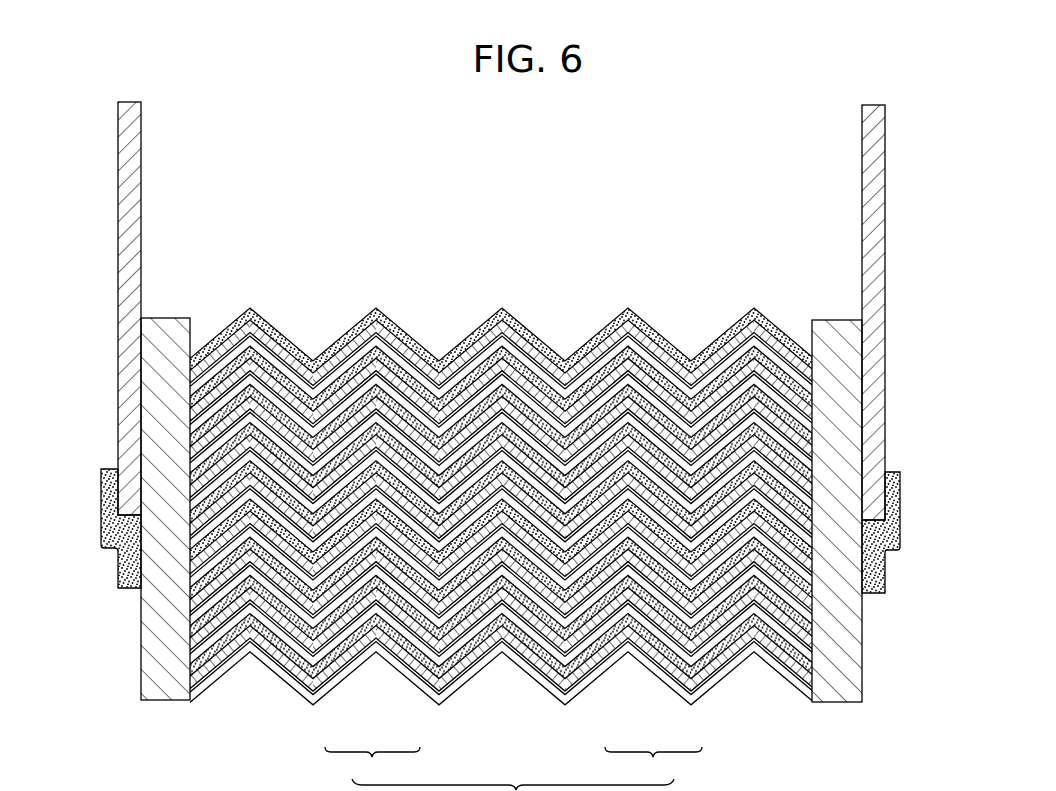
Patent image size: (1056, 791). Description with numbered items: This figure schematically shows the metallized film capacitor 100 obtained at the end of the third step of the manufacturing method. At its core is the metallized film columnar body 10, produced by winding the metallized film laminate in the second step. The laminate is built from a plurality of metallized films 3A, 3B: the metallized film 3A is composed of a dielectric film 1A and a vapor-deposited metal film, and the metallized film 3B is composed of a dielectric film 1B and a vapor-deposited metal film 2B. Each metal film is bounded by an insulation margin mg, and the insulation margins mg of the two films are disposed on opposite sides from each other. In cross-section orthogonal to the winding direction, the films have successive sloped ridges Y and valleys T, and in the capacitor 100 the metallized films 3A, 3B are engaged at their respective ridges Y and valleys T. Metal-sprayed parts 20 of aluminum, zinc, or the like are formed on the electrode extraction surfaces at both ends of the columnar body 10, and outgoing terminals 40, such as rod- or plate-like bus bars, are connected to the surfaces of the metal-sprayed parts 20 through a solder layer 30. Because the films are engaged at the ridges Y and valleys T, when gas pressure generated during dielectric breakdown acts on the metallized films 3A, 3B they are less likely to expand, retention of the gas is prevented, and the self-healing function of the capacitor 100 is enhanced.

The metallized film capacitor 100 is at (966, 129).
The metallized film columnar body 10 is at (502, 468).
The metal-sprayed part 20 is at (140, 630).
The solder layer 30 is at (101, 537).
The outgoing terminal 40 is at (122, 200).
The insulation margin mg is at (205, 432).
The ridge Y is at (249, 306).
The valley T is at (312, 358).
The dielectric film 1A is at (607, 652).
The dielectric film 1B is at (332, 678).
The vapor-deposited metal film 2B is at (403, 655).
The metallized film 3A is at (527, 768).
The metallized film 3B is at (372, 767).